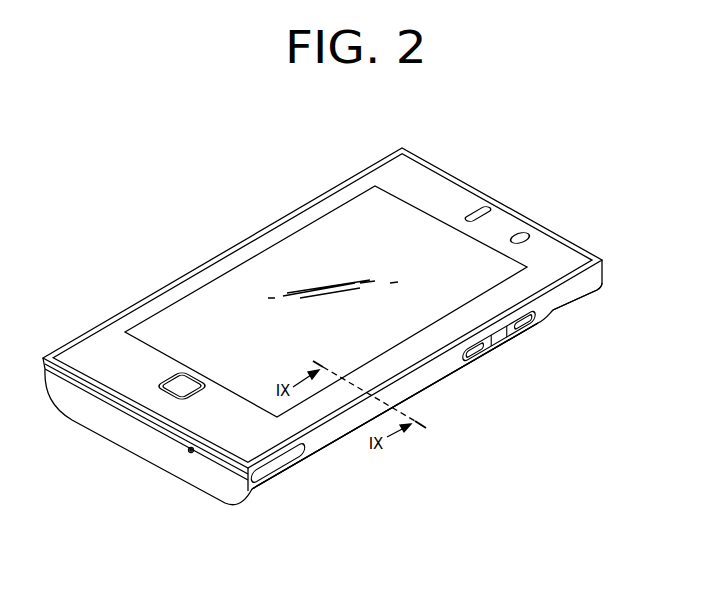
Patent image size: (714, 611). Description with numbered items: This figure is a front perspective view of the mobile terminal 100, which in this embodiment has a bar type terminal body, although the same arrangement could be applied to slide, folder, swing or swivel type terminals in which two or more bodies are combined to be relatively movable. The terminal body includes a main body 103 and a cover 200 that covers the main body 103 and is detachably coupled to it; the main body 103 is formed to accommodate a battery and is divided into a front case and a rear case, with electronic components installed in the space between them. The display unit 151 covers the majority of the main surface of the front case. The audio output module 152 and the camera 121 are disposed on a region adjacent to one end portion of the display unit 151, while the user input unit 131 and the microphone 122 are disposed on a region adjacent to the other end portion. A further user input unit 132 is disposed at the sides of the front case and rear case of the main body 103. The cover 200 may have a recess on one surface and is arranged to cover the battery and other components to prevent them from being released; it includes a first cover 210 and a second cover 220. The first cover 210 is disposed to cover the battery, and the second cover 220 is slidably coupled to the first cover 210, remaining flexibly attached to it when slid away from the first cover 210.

The mobile terminal 100 is at (225, 223).
The main body 103 is at (556, 257).
The camera 121 is at (523, 237).
The microphone 122 is at (191, 453).
The user input unit 131 is at (180, 385).
The user input unit 132 is at (497, 338).
The display unit 151 is at (203, 303).
The audio output module 152 is at (480, 210).
The cover 200 is at (372, 551).
The first cover 210 is at (337, 432).
The second cover 220 is at (278, 470).